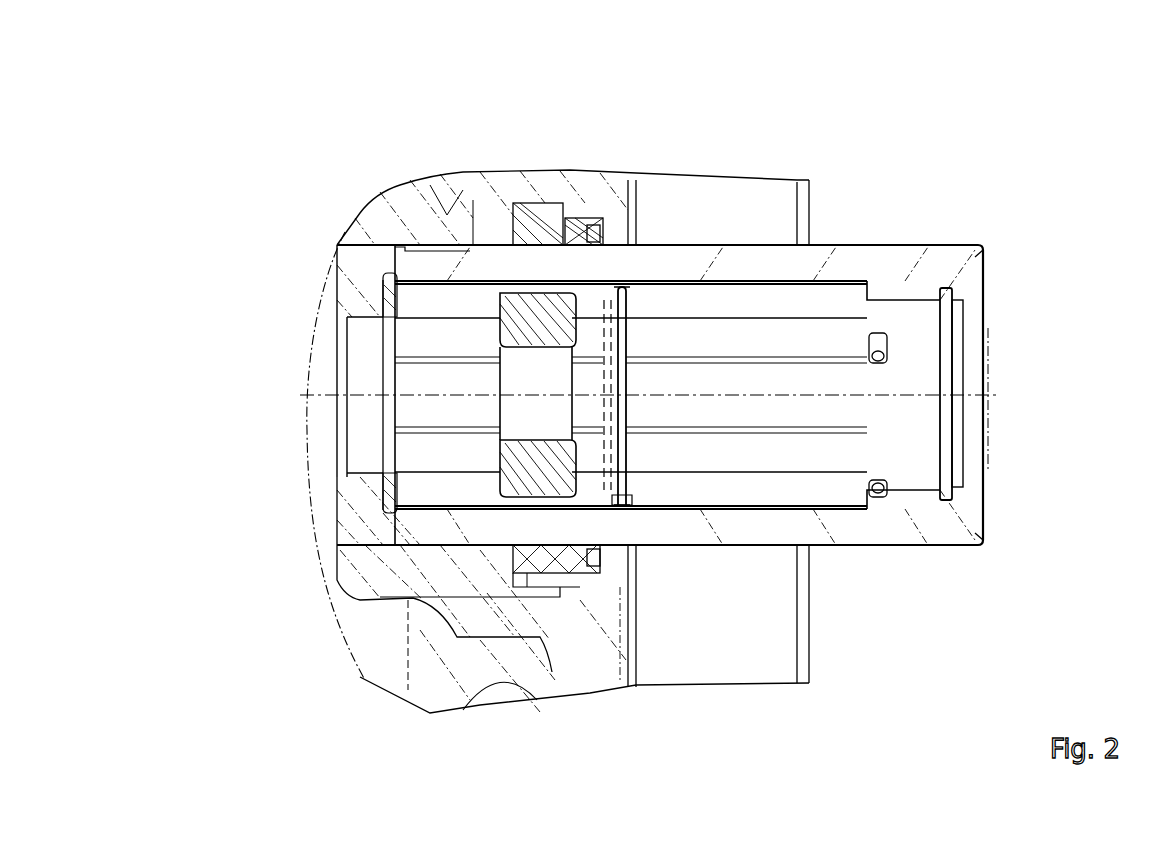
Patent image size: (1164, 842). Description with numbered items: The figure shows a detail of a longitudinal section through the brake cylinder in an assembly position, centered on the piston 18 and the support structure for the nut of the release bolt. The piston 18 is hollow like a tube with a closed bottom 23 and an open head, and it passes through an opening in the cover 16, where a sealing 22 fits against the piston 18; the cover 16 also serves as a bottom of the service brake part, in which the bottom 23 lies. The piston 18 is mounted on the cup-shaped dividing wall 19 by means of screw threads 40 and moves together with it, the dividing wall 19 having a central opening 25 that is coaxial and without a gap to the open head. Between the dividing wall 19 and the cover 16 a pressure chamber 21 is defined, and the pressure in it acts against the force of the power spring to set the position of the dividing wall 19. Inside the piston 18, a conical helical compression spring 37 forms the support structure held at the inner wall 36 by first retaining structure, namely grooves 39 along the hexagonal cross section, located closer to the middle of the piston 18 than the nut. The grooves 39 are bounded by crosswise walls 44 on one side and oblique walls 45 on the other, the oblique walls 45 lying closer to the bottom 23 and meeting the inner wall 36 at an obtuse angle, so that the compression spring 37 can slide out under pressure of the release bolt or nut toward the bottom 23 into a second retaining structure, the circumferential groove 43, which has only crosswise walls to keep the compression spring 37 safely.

The cover 16 is at (603, 602).
The piston 18 is at (843, 260).
The dividing wall 19 is at (545, 627).
The pressure chamber 21 is at (490, 565).
The sealing 22 is at (575, 580).
The bottom 23 is at (520, 468).
The central opening 25 is at (353, 435).
The inner wall 36 is at (752, 283).
The compression spring 37 is at (620, 482).
The grooves 39 is at (633, 495).
The screw threads 40 is at (410, 238).
The circumferential groove 43 is at (947, 463).
The walls 44 is at (618, 297).
The oblique walls 45 is at (627, 482).